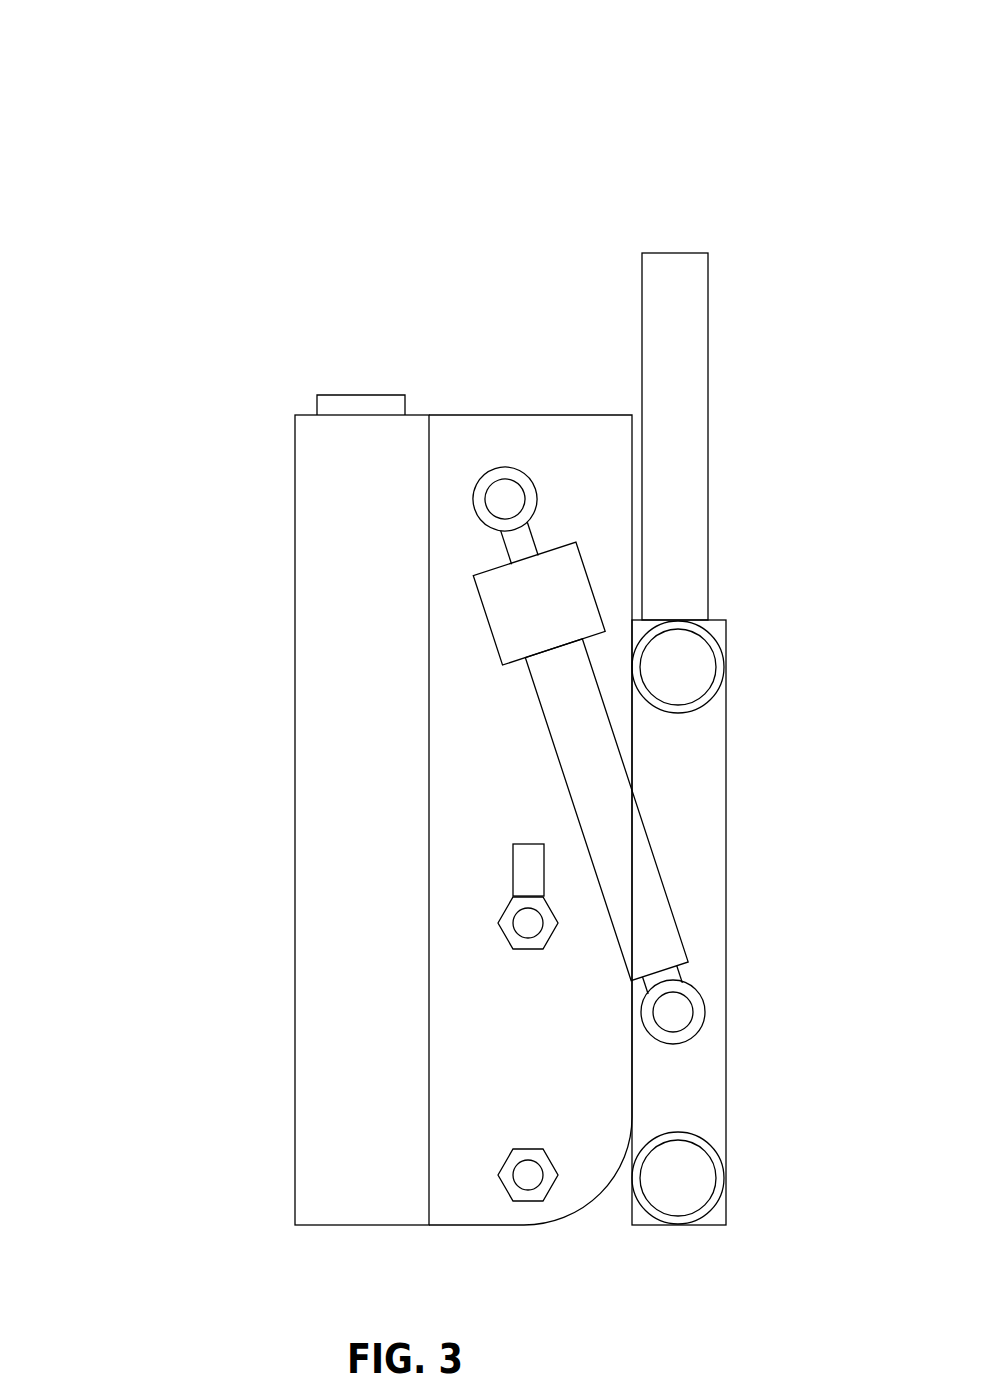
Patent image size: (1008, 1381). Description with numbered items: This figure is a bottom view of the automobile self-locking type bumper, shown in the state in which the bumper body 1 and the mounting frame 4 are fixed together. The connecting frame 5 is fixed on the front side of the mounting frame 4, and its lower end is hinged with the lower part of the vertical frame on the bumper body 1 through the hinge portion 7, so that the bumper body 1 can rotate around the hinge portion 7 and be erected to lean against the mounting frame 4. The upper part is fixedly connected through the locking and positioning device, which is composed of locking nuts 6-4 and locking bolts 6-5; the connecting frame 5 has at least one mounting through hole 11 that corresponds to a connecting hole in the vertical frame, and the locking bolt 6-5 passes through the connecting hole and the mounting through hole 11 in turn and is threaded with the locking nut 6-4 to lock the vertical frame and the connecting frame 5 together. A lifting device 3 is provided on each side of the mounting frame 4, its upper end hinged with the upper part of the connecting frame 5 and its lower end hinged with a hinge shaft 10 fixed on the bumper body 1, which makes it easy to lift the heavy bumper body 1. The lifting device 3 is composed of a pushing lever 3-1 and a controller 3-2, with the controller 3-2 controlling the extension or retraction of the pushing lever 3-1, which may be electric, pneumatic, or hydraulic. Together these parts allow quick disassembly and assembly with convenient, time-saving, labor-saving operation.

The bumper body 1 is at (702, 782).
The lifting device 3 is at (513, 519).
The pushing lever 3-1 is at (528, 610).
The controller 3-2 is at (355, 405).
The mounting frame 4 is at (347, 500).
The connecting frame 5 is at (567, 478).
The locking nut 6-4 is at (527, 922).
The locking bolt 6-5 is at (512, 935).
The hinge portion 7 is at (525, 1173).
The hinge shaft 10 is at (673, 1012).
The mounting through hole 11 is at (528, 869).